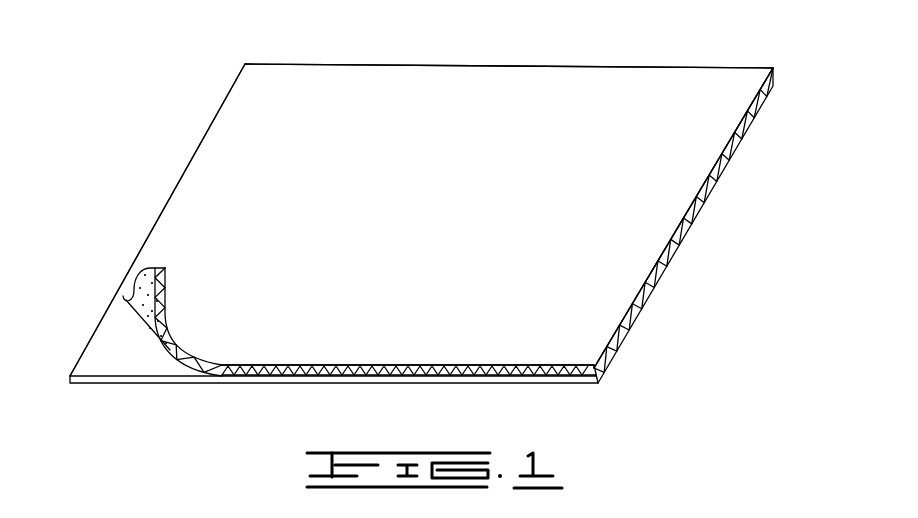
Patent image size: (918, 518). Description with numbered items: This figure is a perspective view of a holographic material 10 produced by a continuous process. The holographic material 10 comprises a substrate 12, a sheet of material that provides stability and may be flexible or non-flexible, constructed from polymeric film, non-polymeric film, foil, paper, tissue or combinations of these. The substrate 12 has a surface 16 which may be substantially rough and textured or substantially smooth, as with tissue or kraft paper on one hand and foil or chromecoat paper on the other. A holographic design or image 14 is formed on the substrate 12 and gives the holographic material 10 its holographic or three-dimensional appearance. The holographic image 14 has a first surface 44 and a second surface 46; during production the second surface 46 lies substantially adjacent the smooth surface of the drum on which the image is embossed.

The holographic material 10 is at (778, 40).
The substrate 12 is at (618, 347).
The holographic image 14 is at (346, 378).
The surface 16 is at (103, 360).
The first surface 44 is at (140, 305).
The second surface 46 is at (205, 185).